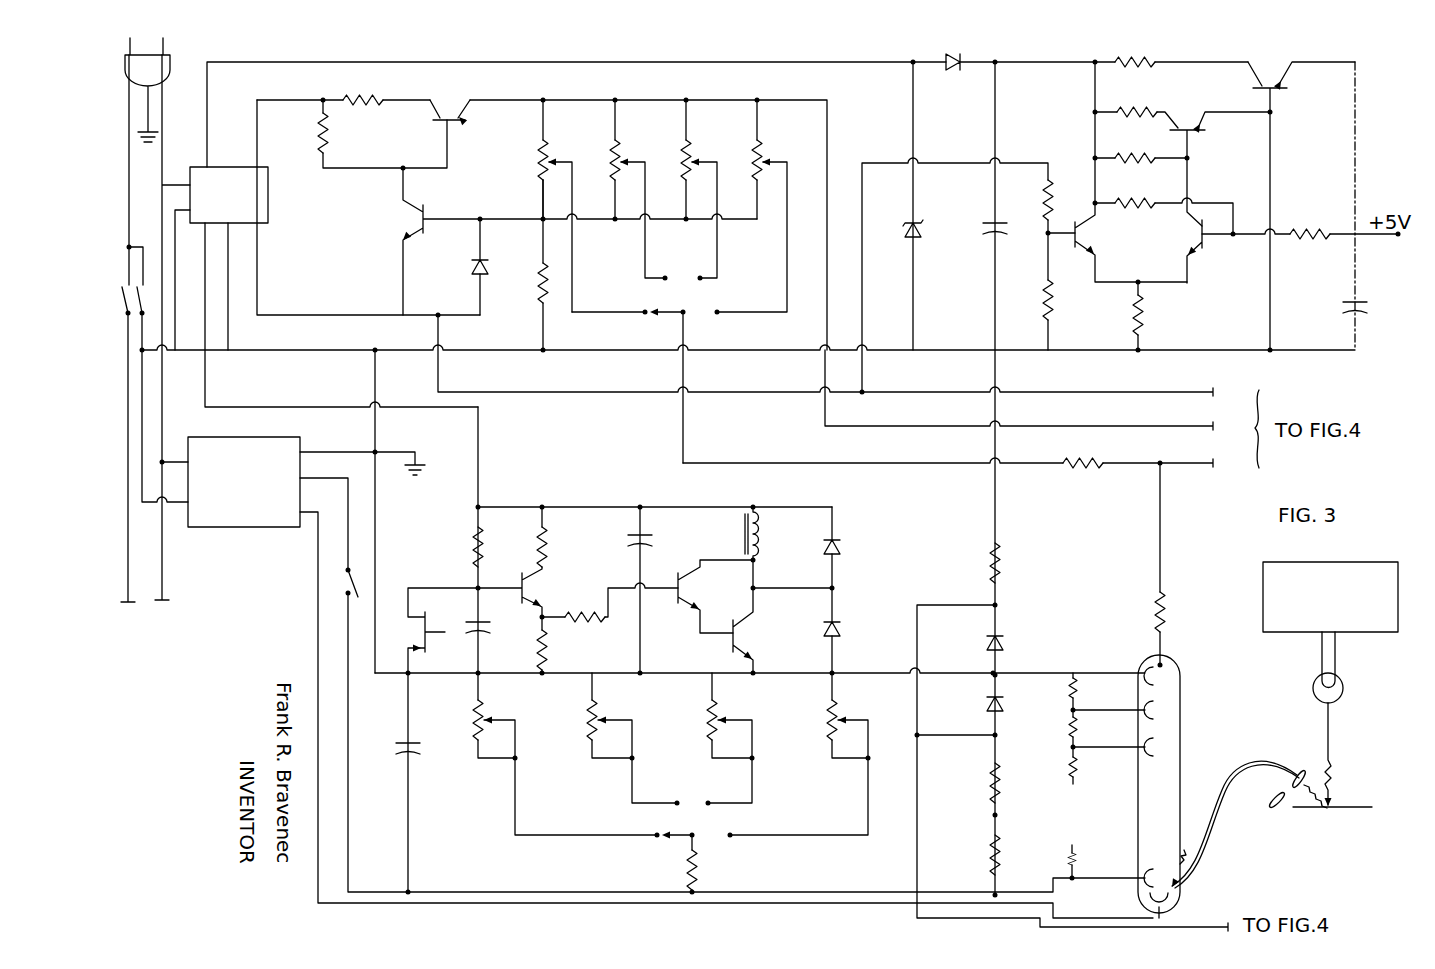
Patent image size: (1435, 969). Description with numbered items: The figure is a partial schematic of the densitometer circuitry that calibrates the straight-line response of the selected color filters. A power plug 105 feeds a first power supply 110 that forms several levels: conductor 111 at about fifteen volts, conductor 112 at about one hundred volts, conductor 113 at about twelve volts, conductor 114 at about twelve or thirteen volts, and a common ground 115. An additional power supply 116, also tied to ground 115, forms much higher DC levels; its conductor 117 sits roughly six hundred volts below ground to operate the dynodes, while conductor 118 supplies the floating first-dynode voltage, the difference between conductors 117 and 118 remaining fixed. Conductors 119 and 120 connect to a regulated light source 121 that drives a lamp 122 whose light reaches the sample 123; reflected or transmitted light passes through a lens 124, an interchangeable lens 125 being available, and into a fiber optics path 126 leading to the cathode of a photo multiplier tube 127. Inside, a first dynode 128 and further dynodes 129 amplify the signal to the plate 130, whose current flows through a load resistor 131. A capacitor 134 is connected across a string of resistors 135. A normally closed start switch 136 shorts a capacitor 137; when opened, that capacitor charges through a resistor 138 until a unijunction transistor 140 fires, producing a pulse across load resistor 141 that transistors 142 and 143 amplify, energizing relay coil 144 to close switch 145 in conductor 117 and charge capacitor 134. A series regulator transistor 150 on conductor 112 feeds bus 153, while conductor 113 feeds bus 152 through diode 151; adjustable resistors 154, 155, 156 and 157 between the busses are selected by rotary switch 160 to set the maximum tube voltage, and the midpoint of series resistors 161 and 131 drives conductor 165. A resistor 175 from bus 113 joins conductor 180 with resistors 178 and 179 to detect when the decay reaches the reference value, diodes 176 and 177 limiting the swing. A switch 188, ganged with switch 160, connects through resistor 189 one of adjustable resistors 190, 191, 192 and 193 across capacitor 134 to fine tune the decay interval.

The power plug 105 is at (168, 72).
The first power supply 110 is at (268, 205).
The conductor 111 is at (354, 62).
The conductor 112 is at (268, 100).
The conductor 113 is at (258, 277).
The conductor 114 is at (207, 396).
The ground 115 is at (230, 347).
The additional power supply 116 is at (300, 441).
The conductor 117 is at (362, 805).
The conductor 118 is at (320, 727).
The conductor 119 is at (163, 566).
The conductor 120 is at (128, 590).
The regulated light source 121 is at (1263, 583).
The lamp 122 is at (1313, 686).
The sample 123 is at (1355, 805).
The lens 124 is at (1301, 768).
The additional lens 125 is at (1276, 811).
The fiber optics path 126 is at (1233, 768).
The photo multiplier tube 127 is at (1180, 667).
The first dynode 128 is at (1145, 872).
The additional dynodes 129 is at (1158, 713).
The anode or plate 130 is at (1158, 663).
The load resistor 131 is at (1155, 597).
The capacitor 134 is at (410, 745).
The resistors 135 is at (1068, 728).
The start switch 136 is at (430, 625).
The capacitor 137 is at (463, 645).
The resistor 138 is at (484, 530).
The unijunction transistor 140 is at (530, 587).
The load resistor 141 is at (548, 645).
The transistor 142 is at (671, 600).
The transistor 143 is at (740, 640).
The relay coil 144 is at (760, 522).
The switch 145 is at (357, 582).
The transistor 150 is at (440, 108).
The diode 151 is at (478, 262).
The bus 152 is at (508, 219).
The bus 153 is at (522, 100).
The adjustable resistor 154 is at (548, 143).
The adjustable resistor 155 is at (620, 148).
The adjustable resistor 156 is at (692, 148).
The adjustable resistor 157 is at (762, 148).
The rotary switch 160 is at (684, 318).
The series resistor 161 is at (1078, 470).
The conductor 165 is at (1190, 465).
The resistor 175 is at (1000, 555).
The diode 176 is at (1000, 640).
The diode 177 is at (985, 706).
The resistor 178 is at (988, 785).
The resistor 179 is at (985, 853).
The conductor 180 is at (912, 868).
The switch 188 is at (685, 835).
The resistor 189 is at (700, 868).
The adjustable resistor 190 is at (485, 708).
The adjustable resistor 191 is at (598, 708).
The adjustable resistor 192 is at (718, 708).
The adjustable resistor 193 is at (838, 708).